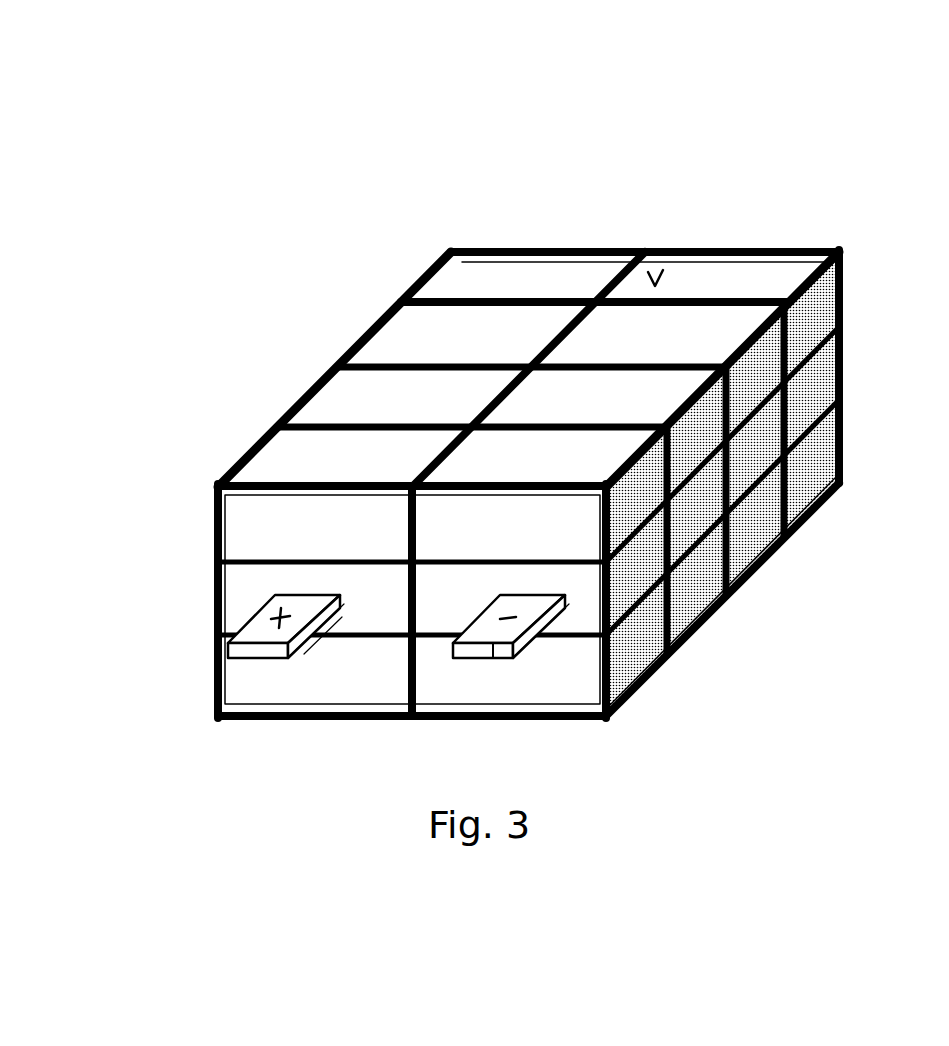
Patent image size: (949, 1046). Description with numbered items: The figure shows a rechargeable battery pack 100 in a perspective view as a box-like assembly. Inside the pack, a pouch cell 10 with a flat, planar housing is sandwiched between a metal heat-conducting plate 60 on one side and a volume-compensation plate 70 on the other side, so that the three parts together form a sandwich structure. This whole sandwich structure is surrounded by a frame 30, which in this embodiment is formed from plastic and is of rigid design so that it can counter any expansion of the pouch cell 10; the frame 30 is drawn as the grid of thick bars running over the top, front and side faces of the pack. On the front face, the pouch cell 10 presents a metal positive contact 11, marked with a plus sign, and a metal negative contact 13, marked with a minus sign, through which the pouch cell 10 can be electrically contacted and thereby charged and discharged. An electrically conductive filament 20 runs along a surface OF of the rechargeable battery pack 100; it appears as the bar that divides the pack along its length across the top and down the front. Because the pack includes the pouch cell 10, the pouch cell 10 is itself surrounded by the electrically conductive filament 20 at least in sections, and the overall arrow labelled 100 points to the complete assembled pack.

The rechargeable battery pack 100 is at (257, 146).
The pouch cell 10 is at (845, 360).
The electrically conductive filament 20 is at (557, 305).
The frame 30 is at (243, 453).
The heat-conducting plate 60 is at (845, 282).
The volume-compensation plate 70 is at (845, 445).
The surface OF is at (657, 248).
The positive contact 11 is at (240, 652).
The negative contact 13 is at (497, 660).